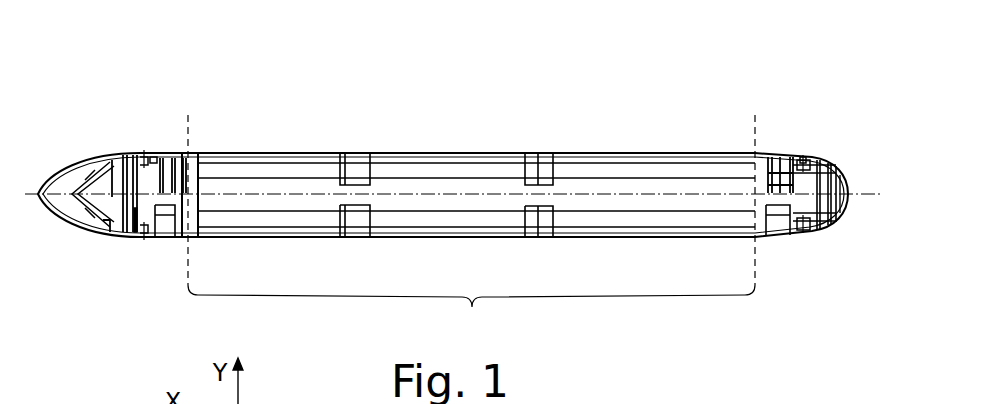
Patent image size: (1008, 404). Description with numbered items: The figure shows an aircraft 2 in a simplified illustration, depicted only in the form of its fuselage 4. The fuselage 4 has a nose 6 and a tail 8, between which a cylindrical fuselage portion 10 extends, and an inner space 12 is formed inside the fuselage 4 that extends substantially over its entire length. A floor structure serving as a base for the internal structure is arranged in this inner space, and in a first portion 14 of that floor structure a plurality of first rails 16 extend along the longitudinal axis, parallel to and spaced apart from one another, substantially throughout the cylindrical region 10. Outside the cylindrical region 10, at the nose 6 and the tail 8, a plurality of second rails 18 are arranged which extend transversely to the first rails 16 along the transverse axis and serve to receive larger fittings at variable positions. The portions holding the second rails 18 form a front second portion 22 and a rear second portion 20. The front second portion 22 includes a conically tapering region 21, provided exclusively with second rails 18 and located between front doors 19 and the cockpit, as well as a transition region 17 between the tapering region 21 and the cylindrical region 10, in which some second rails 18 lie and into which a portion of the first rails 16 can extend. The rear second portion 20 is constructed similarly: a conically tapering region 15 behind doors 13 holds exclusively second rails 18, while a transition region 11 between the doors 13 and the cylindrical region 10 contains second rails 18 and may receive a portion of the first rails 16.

The aircraft 2 is at (443, 140).
The fuselage 4 is at (230, 153).
The nose 6 is at (114, 186).
The tail 8 is at (832, 192).
The cylindrical fuselage portion 10 is at (471, 314).
The transition region 11 is at (762, 284).
The inner space 12 is at (380, 165).
The doors 13 is at (815, 233).
The first portion 14 is at (265, 180).
The conically tapering region 15 is at (808, 284).
The first rails 16 is at (512, 158).
The transition region 17 is at (188, 284).
The second rails 18 is at (141, 153).
The front doors 19 is at (145, 240).
The rear second portion 20 is at (810, 157).
The conically tapering region 21 is at (140, 284).
The front second portion 22 is at (158, 150).